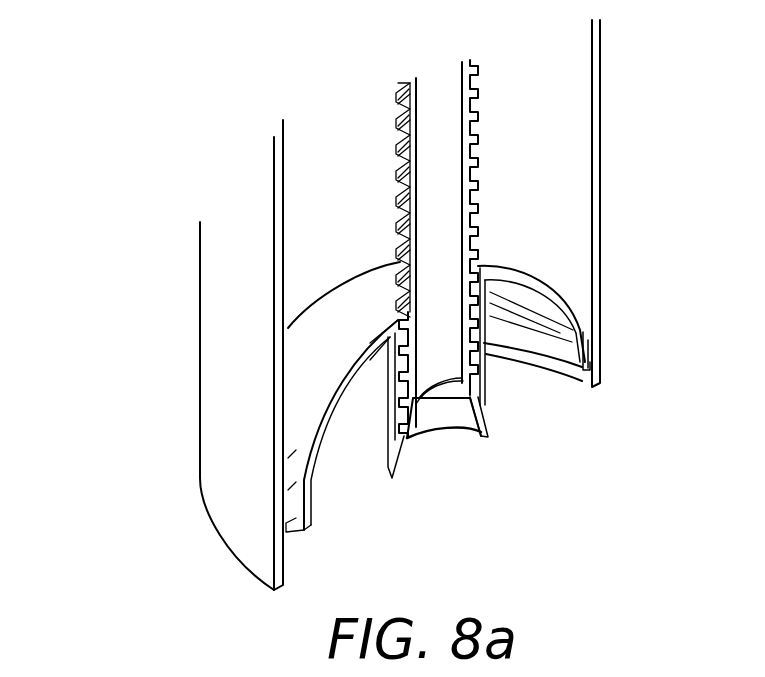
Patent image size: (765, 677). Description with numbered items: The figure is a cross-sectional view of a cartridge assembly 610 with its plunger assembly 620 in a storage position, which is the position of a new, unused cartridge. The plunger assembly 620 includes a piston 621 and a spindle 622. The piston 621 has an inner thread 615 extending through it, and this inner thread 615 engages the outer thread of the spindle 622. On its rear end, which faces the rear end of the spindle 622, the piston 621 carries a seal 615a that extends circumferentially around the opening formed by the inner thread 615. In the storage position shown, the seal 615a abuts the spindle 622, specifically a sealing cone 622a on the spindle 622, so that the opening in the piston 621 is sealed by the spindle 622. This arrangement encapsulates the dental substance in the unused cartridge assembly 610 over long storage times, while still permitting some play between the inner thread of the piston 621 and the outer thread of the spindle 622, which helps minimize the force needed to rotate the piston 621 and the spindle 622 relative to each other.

The cartridge assembly 610 is at (140, 186).
The inner thread 615 is at (477, 322).
The seal 615a is at (487, 385).
The plunger assembly 620 is at (432, 480).
The piston 621 is at (318, 343).
The spindle 622 is at (472, 103).
The sealing cone 622a is at (480, 403).